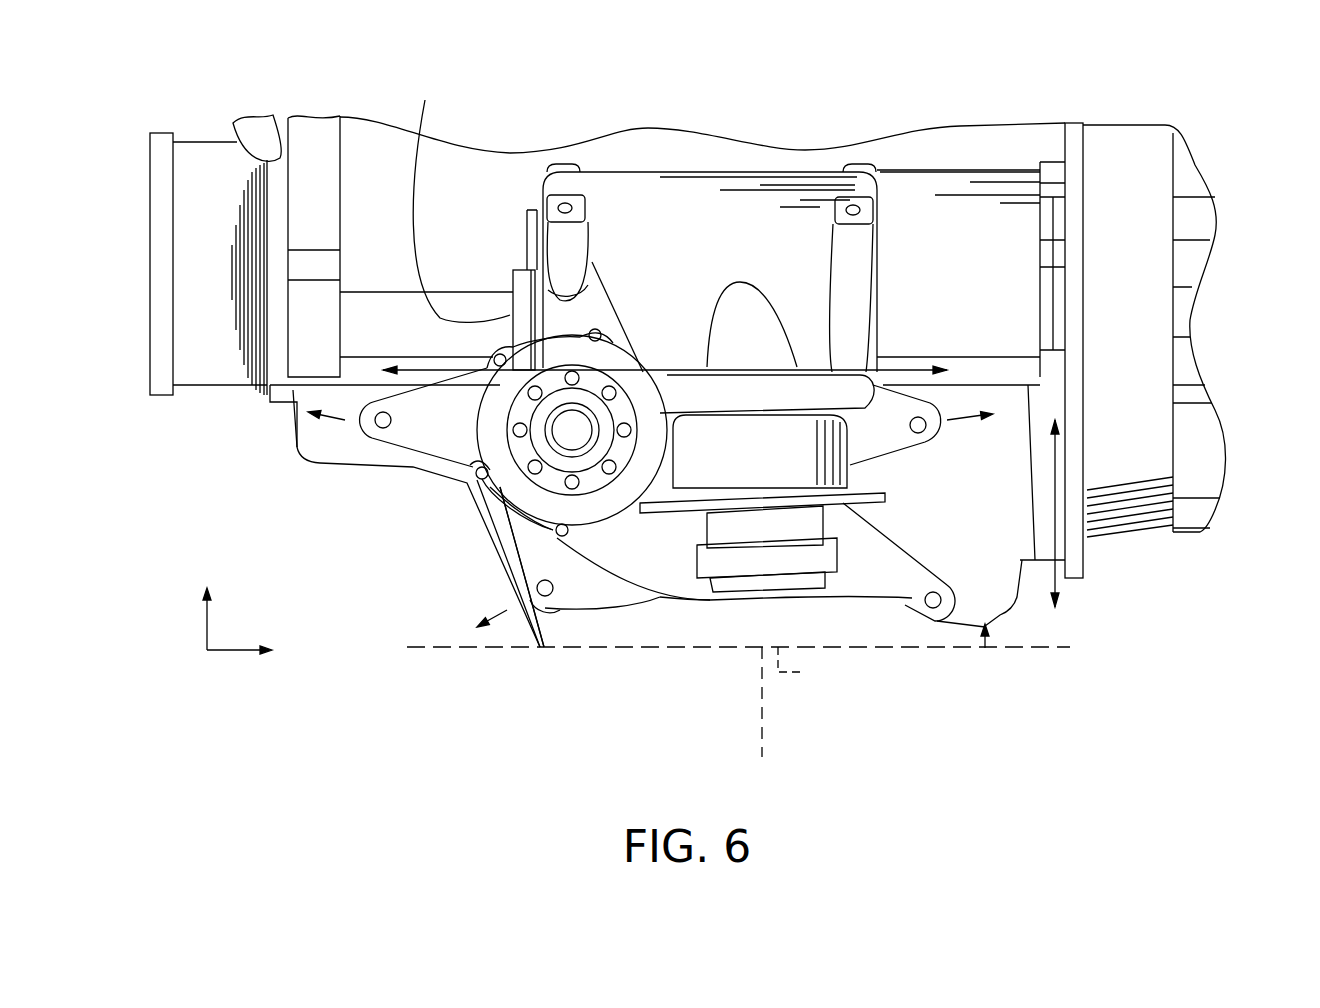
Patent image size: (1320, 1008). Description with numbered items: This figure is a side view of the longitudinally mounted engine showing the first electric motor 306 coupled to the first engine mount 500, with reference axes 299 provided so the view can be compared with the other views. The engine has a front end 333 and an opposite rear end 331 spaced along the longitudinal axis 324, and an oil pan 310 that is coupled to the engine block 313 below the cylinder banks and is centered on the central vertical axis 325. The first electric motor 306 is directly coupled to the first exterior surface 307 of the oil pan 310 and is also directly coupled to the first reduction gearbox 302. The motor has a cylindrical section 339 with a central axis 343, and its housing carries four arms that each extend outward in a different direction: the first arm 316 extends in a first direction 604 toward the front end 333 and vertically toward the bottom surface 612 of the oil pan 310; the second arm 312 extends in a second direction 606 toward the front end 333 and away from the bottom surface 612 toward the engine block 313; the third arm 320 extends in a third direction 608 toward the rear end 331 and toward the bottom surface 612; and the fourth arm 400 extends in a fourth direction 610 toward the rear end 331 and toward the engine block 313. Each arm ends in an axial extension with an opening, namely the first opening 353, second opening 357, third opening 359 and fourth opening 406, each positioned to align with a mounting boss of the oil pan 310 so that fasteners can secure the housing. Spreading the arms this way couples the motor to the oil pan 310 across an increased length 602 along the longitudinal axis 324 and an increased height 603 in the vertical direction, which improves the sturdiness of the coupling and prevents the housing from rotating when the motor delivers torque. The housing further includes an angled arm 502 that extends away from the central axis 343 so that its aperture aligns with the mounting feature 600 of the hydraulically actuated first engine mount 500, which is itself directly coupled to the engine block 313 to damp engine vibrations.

The reference axes 299 is at (232, 667).
The first reduction gearbox 302 is at (622, 360).
The first electric motor 306 is at (693, 590).
The first exterior surface 307 is at (527, 543).
The oil pan 310 is at (493, 508).
The second arm 312 is at (413, 433).
The engine block 313 is at (507, 243).
The first arm 316 is at (583, 592).
The third arm 320 is at (912, 600).
The longitudinal axis 324 is at (443, 650).
The central vertical axis 325 is at (760, 748).
The rear end 331 is at (1218, 309).
The front end 333 is at (128, 292).
The cylindrical section 339 is at (653, 588).
The central axis 343 is at (667, 450).
The first opening 353 is at (552, 593).
The second opening 357 is at (413, 435).
The third opening 359 is at (950, 592).
The fourth arm 400 is at (885, 445).
The fourth opening 406 is at (915, 438).
The first engine mount 500 is at (800, 297).
The angled arm 502 is at (457, 196).
The mounting feature 600 is at (592, 262).
The increased length 602 is at (423, 370).
The increased height 603 is at (1055, 530).
The first direction 604 is at (507, 610).
The second direction 606 is at (345, 422).
The third direction 608 is at (983, 627).
The fourth direction 610 is at (950, 420).
The bottom surface 612 is at (814, 667).